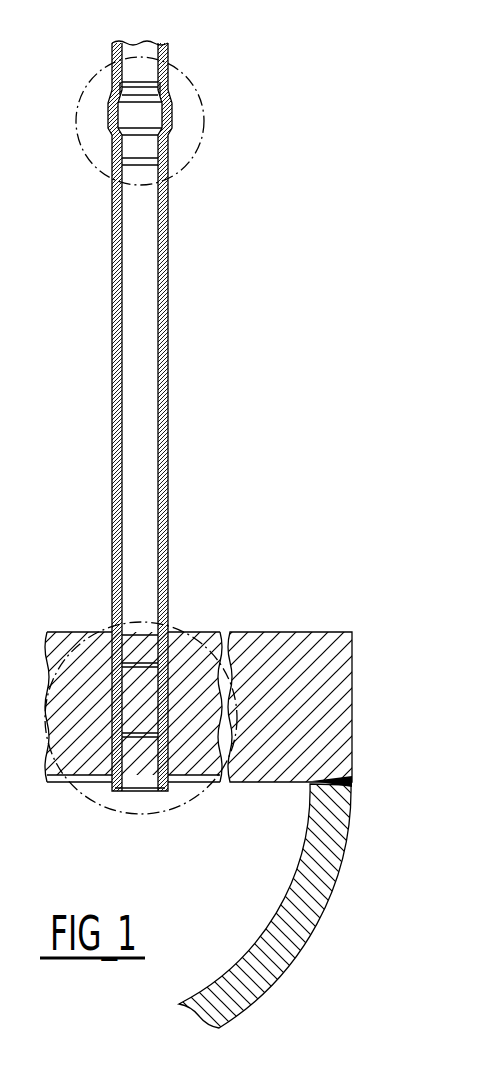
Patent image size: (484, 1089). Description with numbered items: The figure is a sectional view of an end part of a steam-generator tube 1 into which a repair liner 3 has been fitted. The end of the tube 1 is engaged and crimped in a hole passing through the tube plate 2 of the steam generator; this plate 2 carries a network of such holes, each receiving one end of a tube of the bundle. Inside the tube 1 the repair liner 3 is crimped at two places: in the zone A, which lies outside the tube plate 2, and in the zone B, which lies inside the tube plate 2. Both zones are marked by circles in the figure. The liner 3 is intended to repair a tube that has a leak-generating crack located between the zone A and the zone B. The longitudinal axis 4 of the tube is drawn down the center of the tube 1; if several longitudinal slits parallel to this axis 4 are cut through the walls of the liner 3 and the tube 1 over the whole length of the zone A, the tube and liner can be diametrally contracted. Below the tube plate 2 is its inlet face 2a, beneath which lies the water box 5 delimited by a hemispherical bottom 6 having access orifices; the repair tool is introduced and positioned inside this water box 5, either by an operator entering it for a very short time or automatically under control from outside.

The steam-generator tube 1 is at (160, 416).
The tube plate 2 is at (210, 632).
The inlet face of the tube plate 2a is at (193, 786).
The repair liner 3 is at (158, 293).
The axis of the tube 4 is at (140, 252).
The water box 5 is at (152, 854).
The hemispherical bottom 6 is at (307, 920).
The zone A is at (84, 153).
The zone B is at (86, 797).